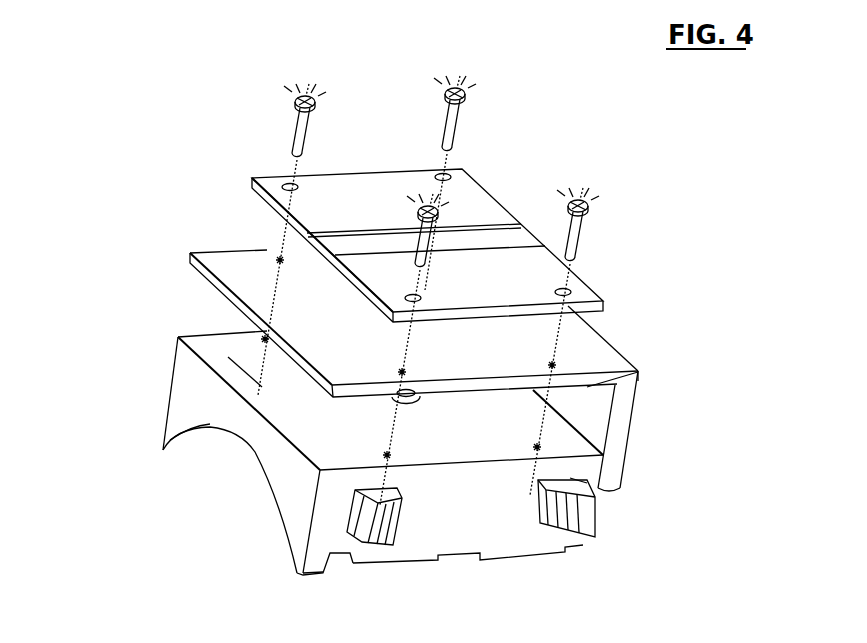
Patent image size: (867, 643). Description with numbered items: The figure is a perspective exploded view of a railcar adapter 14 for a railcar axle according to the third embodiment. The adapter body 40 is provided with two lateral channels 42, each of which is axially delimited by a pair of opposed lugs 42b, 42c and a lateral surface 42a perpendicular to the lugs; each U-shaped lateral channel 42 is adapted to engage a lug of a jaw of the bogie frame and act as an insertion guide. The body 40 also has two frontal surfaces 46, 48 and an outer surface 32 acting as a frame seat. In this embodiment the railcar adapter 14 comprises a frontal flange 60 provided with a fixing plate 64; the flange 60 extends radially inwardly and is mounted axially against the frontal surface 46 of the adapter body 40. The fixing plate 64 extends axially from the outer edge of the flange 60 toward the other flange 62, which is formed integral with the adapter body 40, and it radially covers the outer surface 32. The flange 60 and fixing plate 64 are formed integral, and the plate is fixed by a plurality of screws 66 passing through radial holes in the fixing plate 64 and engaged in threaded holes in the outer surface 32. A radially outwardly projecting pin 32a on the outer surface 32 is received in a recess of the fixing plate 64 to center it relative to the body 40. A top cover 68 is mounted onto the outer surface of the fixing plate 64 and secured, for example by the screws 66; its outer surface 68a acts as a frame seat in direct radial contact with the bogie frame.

The railcar adapter 14 is at (156, 216).
The outer surface 32 is at (228, 357).
The pin 32a is at (400, 400).
The adapter body 40 is at (182, 368).
The lateral channel 42 is at (349, 546).
The lateral surface 42a is at (460, 557).
The lug 42b is at (382, 548).
The lug 42c is at (572, 543).
The frontal surface 46 is at (603, 455).
The frontal surface 48 is at (173, 407).
The frontal flange 60 is at (613, 462).
The flange 62 is at (297, 553).
The fixing plate 64 is at (232, 252).
The screws 66 is at (582, 237).
The top cover 68 is at (407, 170).
The outer surface 68a is at (483, 203).